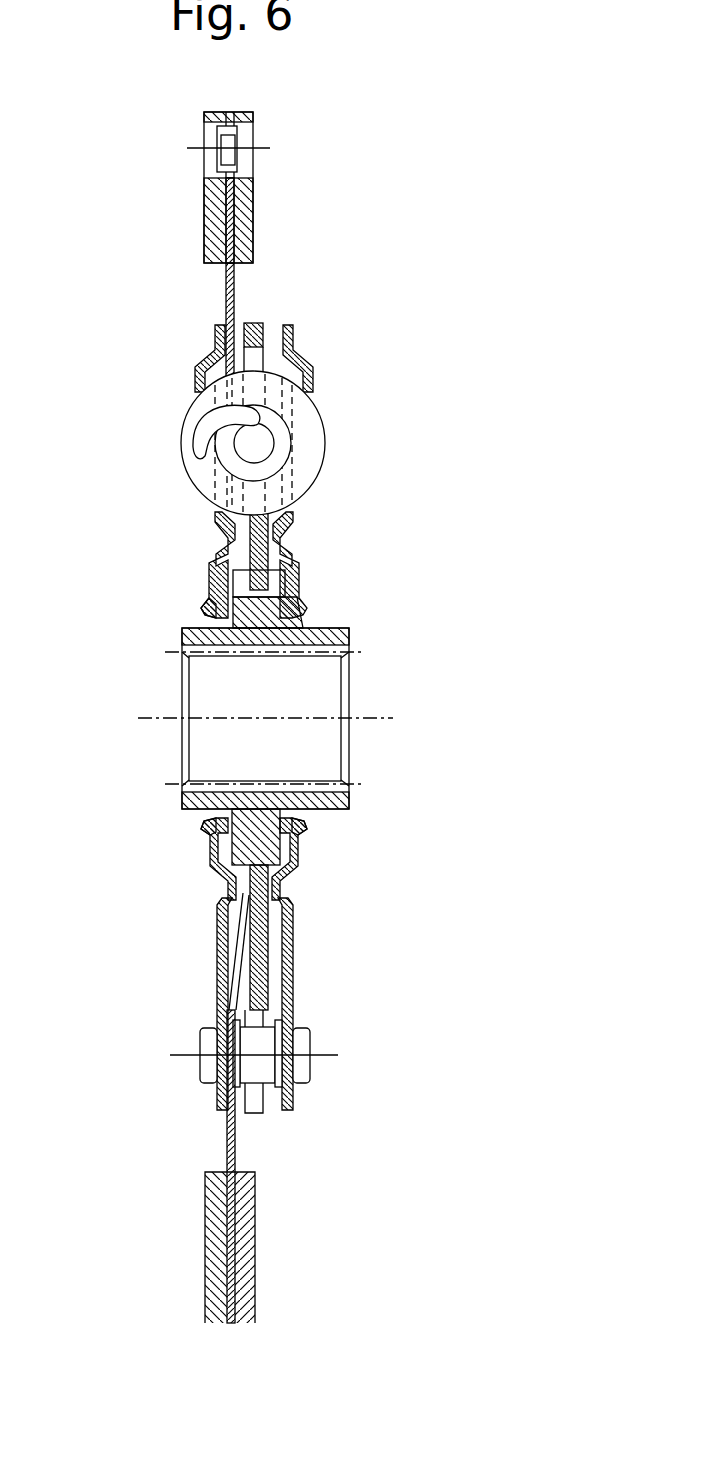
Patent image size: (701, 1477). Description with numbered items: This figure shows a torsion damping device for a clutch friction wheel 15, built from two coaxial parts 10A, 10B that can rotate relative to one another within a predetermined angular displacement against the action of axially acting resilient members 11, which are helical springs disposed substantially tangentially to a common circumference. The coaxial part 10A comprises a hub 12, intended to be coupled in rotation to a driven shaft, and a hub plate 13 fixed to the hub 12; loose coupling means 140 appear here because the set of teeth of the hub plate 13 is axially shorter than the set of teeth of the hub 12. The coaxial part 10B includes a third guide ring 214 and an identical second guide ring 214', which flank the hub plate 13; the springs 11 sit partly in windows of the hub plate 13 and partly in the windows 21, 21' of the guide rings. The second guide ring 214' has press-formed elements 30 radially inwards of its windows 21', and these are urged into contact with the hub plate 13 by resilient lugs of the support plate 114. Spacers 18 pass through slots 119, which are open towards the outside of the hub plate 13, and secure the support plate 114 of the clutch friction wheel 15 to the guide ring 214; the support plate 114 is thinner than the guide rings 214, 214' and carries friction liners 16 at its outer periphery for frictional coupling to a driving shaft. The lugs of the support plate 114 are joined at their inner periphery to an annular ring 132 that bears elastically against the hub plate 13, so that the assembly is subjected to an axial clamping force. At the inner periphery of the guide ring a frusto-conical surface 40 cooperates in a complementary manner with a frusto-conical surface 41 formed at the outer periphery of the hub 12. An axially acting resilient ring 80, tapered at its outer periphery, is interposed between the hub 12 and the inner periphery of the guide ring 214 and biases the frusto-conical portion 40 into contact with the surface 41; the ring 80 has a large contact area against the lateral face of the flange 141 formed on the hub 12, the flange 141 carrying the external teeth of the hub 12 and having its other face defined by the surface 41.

The coaxial part 10A is at (302, 731).
The coaxial part 10B is at (243, 360).
The resilient members 11 is at (318, 480).
The hub 12 is at (295, 731).
The hub plate 13 is at (258, 314).
The clutch friction wheel 15 is at (226, 1247).
The friction liners 16 is at (217, 1218).
The spacers 18 is at (312, 1037).
The window 21 is at (161, 363).
The window 21' is at (329, 361).
The press-formed elements 30 is at (228, 540).
The frusto-conical surface 40 is at (203, 607).
The frusto-conical surface 41 is at (277, 813).
The resilient ring 80 is at (222, 832).
The support plate 114 is at (227, 1130).
The slots 119 is at (257, 1113).
The annular ring 132 is at (240, 897).
The loose coupling means 140 is at (270, 583).
The flange 141 is at (258, 642).
The third guide ring 214 is at (165, 1004).
The second guide ring 214' is at (333, 1004).